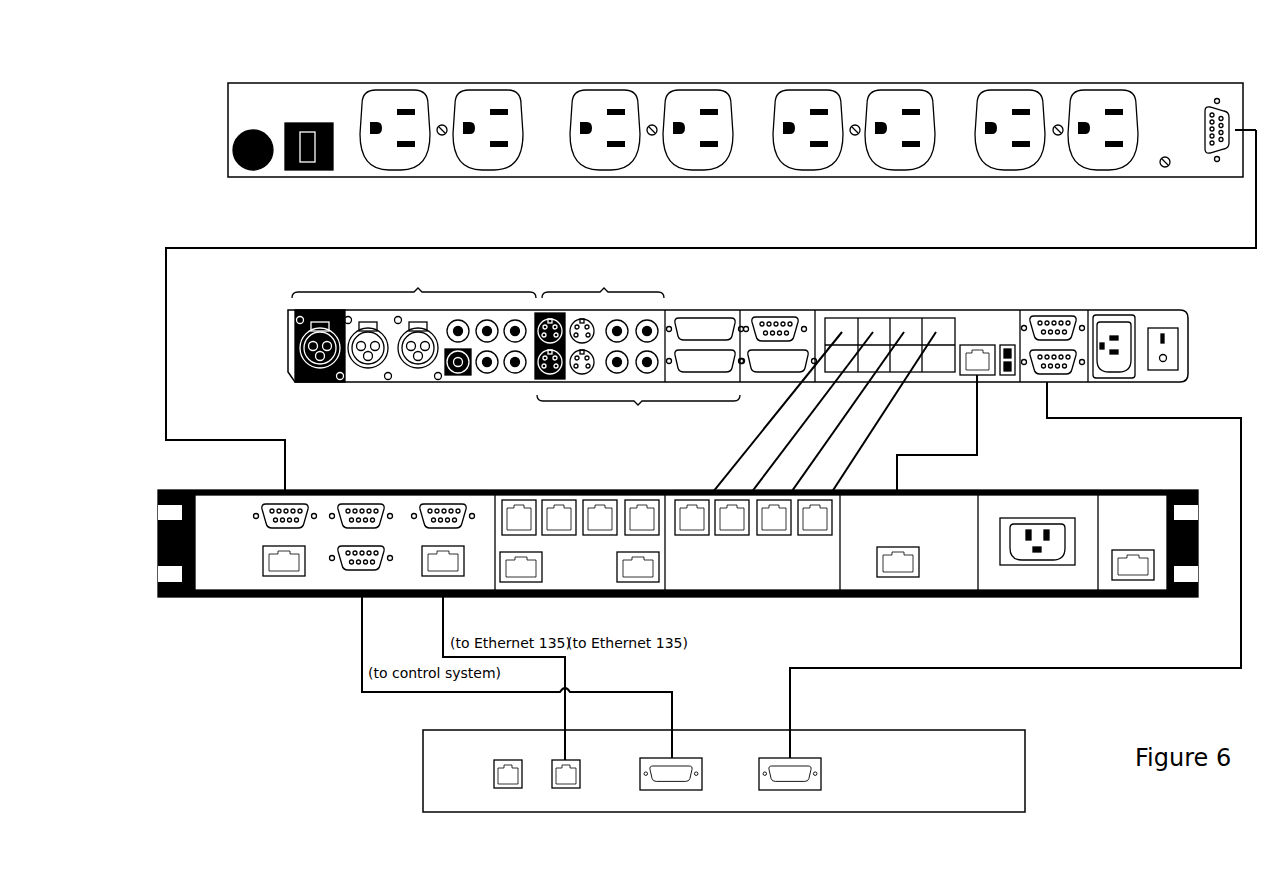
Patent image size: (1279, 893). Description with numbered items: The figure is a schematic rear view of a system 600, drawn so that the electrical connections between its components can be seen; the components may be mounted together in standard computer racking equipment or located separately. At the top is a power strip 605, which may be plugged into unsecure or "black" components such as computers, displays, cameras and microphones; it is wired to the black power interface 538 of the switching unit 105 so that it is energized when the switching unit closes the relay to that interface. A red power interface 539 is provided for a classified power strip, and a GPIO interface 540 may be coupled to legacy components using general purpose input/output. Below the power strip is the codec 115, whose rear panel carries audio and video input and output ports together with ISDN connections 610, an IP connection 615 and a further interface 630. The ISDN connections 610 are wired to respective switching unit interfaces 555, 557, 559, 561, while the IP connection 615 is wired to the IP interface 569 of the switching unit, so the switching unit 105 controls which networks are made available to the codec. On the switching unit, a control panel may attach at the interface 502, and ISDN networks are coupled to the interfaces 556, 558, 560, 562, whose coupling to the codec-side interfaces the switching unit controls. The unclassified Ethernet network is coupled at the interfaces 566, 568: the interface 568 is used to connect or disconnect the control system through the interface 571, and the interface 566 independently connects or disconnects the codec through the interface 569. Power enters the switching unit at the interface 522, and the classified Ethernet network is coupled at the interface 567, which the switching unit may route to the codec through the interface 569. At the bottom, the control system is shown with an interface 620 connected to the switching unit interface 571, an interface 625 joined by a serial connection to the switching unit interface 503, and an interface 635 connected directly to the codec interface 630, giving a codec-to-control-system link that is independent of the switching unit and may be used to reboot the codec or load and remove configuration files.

The system 600 is at (1128, 24).
The power strip 605 is at (226, 135).
The codec 115 is at (262, 347).
The ISDN connections 610 is at (954, 303).
The IP connection 615 is at (978, 345).
The interface 630 is at (1052, 378).
The switching unit 105 is at (142, 550).
The black power interface 538 is at (292, 502).
The red power interface 539 is at (364, 502).
The GPIO interface 540 is at (448, 502).
The interface 502 is at (283, 576).
The interface 503 is at (358, 574).
The interface 571 is at (428, 578).
The interface 556 is at (516, 500).
The interface 558 is at (558, 500).
The interface 560 is at (600, 500).
The interface 562 is at (642, 500).
The switching unit interface 555 is at (688, 500).
The switching unit interface 557 is at (731, 500).
The switching unit interface 559 is at (773, 500).
The switching unit interface 561 is at (818, 500).
The interface 568 is at (520, 582).
The interface 566 is at (637, 582).
The IP interface 569 is at (900, 577).
The interface 522 is at (1038, 566).
The interface 567 is at (1130, 580).
The interface 620 is at (580, 758).
The interface 625 is at (686, 758).
The interface 635 is at (794, 758).